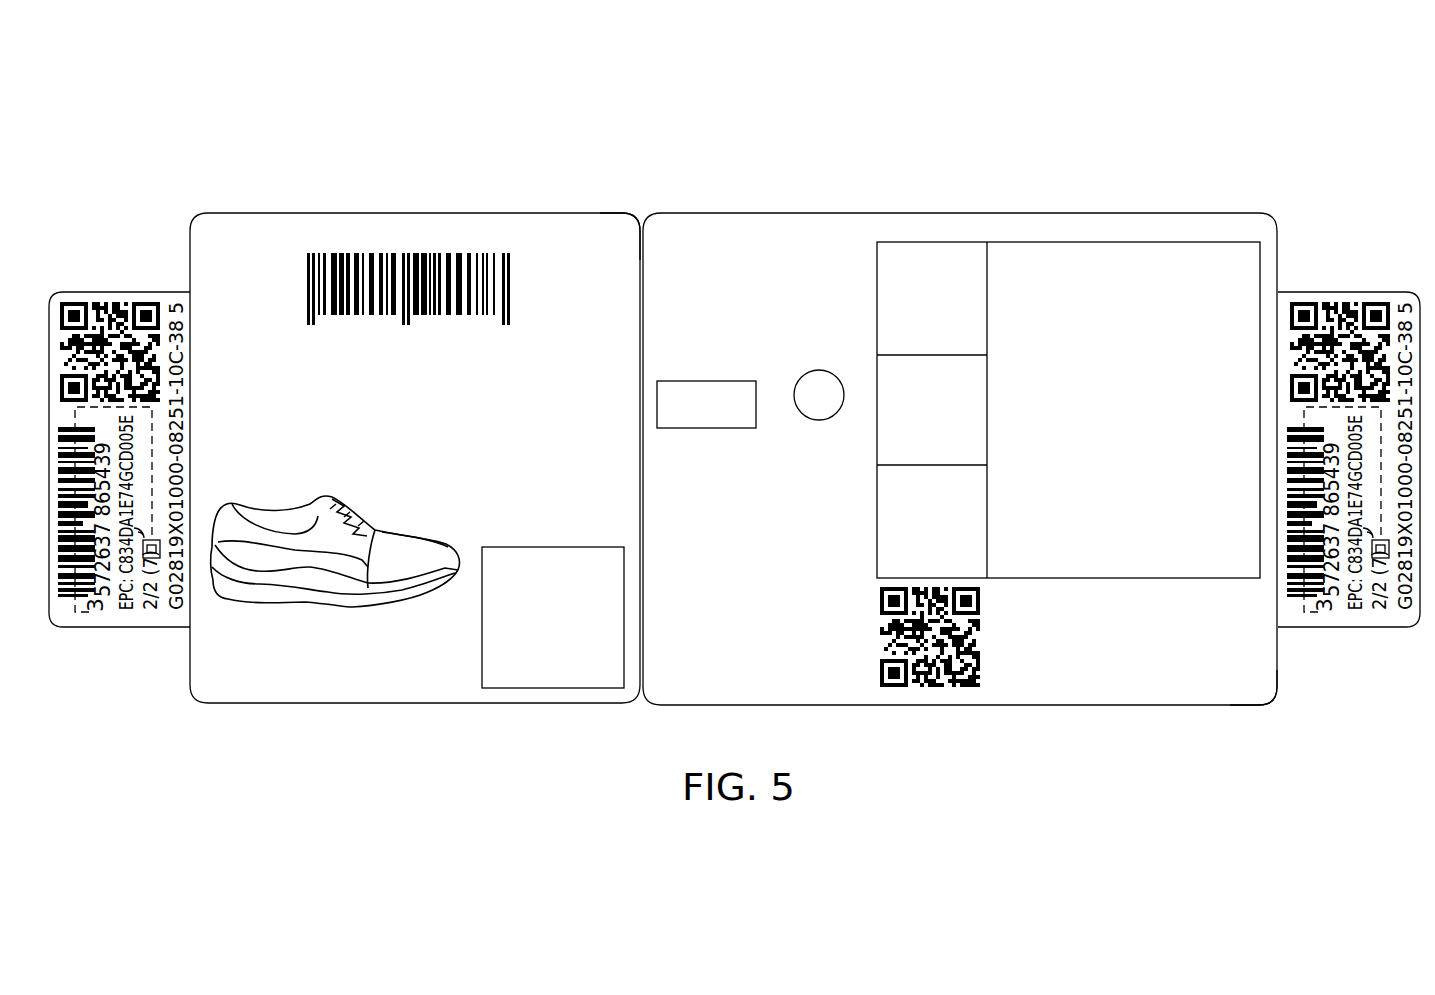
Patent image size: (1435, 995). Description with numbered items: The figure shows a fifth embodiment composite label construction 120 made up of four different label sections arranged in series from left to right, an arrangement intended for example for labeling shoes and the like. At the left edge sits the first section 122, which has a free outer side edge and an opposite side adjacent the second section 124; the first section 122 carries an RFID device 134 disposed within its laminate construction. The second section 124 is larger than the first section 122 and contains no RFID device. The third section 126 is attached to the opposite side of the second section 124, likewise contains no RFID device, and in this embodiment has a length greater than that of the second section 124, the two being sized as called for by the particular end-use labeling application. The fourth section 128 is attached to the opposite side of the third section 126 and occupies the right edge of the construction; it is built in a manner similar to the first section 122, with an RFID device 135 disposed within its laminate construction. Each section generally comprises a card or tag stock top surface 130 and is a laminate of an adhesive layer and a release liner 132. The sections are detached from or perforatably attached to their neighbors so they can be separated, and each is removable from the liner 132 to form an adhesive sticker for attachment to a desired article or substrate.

The composite label construction 120 is at (734, 380).
The first section 122 is at (119, 425).
The second section 124 is at (415, 404).
The third section 126 is at (1014, 423).
The fourth section 128 is at (1312, 404).
The card or tag stock top surface 130 is at (585, 241).
The release liner 132 is at (1348, 682).
The RFID device 134 is at (88, 618).
The RFID device 135 is at (1300, 428).